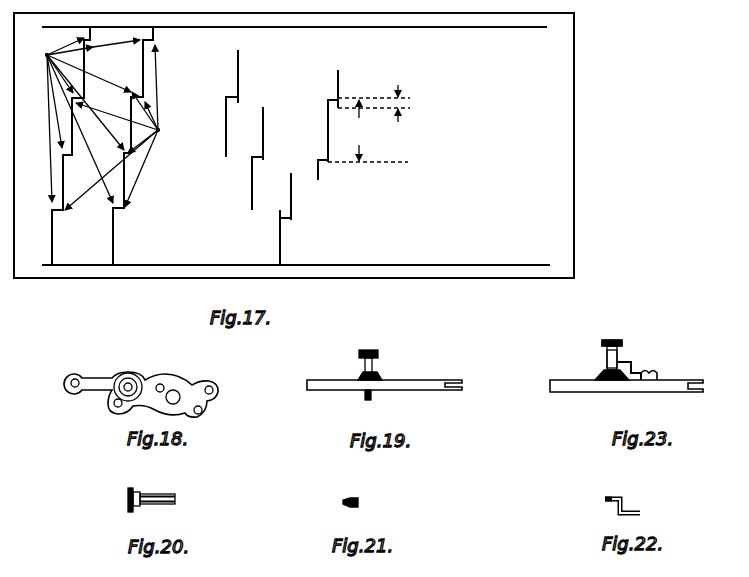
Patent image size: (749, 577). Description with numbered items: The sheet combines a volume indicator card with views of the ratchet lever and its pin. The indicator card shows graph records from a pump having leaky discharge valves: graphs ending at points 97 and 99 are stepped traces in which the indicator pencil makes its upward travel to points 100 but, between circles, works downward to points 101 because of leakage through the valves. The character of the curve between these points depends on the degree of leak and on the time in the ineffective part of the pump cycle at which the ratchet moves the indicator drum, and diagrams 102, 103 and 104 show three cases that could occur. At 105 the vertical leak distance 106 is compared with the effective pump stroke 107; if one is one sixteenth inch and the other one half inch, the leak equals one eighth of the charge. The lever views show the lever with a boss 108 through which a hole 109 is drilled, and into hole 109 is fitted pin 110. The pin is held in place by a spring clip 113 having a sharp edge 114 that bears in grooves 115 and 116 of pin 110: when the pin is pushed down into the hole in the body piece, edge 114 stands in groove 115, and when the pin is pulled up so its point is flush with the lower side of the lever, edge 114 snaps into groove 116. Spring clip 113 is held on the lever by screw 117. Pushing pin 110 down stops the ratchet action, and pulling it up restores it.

In FIG. 17, the graph end point 97 is at (76, 138).
In FIG. 17, the graph end point 99 is at (139, 138).
In FIG. 17, the upward travel points 100 is at (80, 120).
In FIG. 17, the downward travel points 101 is at (127, 127).
In FIG. 17, the diagram 102 is at (247, 158).
In FIG. 17, the diagram 103 is at (221, 103).
In FIG. 17, the diagram 104 is at (274, 219).
In FIG. 17, the graph location 105 is at (364, 125).
In FIG. 17, the leak distance 106 is at (400, 104).
In FIG. 17, the effective pump stroke 107 is at (368, 149).
In FIG. 18, the boss 108 is at (134, 385).
In FIG. 19, the boss 108 is at (383, 378).
In FIG. 18, the hole 109 is at (122, 378).
In FIG. 19, the pin 110 is at (367, 352).
In FIG. 23, the pin 110 is at (618, 340).
In FIG. 20, the pin 110 is at (165, 496).
In FIG. 23, the spring clip 113 is at (640, 362).
In FIG. 22, the spring clip 113 is at (630, 505).
In FIG. 22, the sharp edge 114 is at (605, 500).
In FIG. 23, the groove 115 is at (605, 352).
In FIG. 20, the groove 115 is at (135, 490).
In FIG. 23, the groove 116 is at (603, 365).
In FIG. 20, the groove 116 is at (148, 502).
In FIG. 23, the screw 117 is at (656, 372).
In FIG. 21, the screw 117 is at (347, 497).